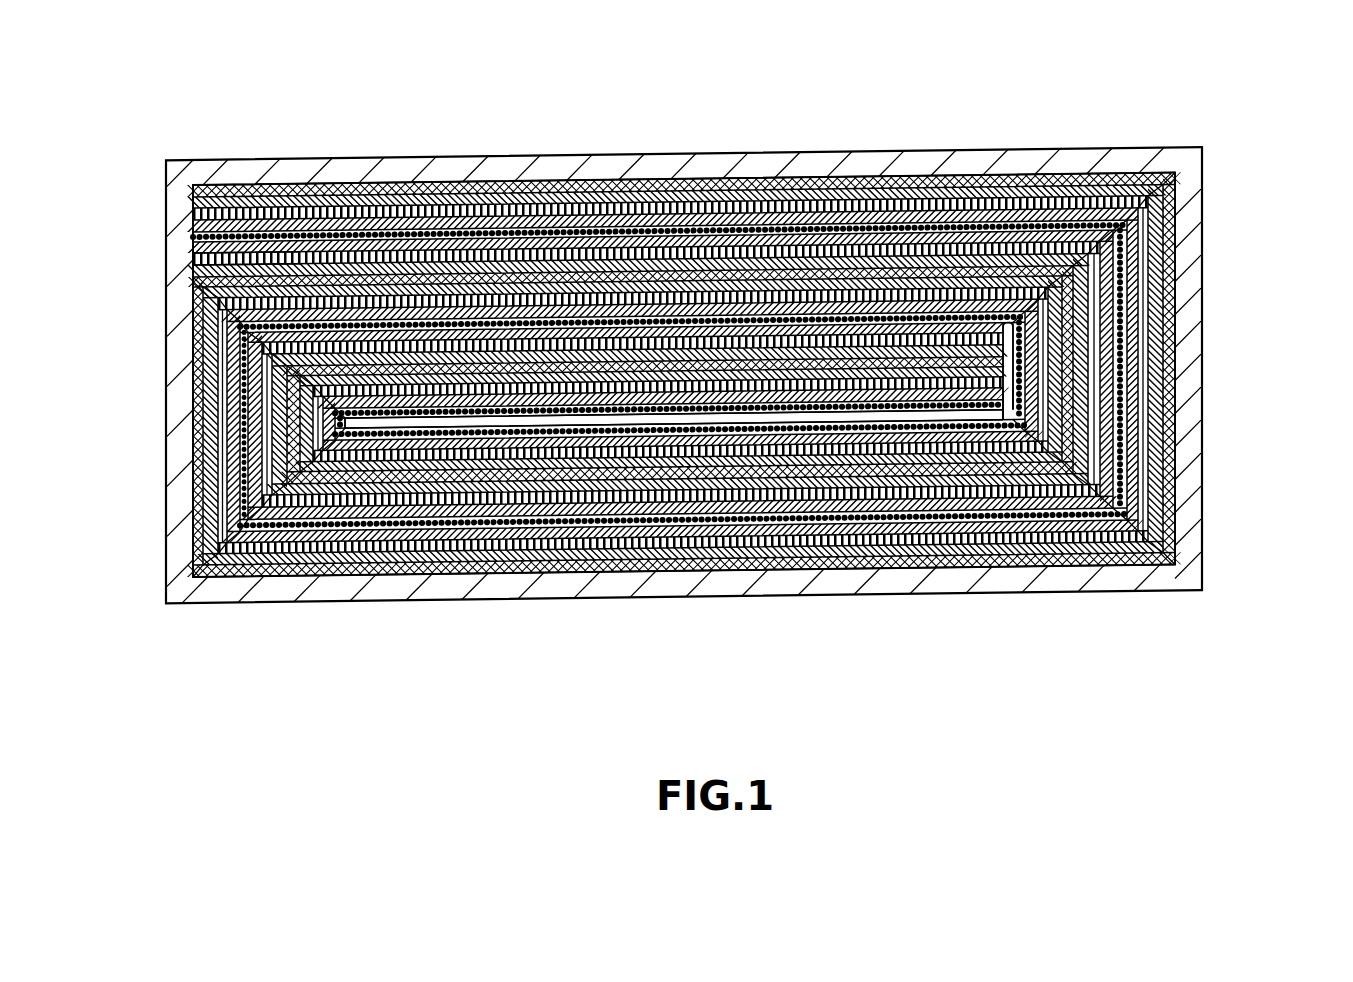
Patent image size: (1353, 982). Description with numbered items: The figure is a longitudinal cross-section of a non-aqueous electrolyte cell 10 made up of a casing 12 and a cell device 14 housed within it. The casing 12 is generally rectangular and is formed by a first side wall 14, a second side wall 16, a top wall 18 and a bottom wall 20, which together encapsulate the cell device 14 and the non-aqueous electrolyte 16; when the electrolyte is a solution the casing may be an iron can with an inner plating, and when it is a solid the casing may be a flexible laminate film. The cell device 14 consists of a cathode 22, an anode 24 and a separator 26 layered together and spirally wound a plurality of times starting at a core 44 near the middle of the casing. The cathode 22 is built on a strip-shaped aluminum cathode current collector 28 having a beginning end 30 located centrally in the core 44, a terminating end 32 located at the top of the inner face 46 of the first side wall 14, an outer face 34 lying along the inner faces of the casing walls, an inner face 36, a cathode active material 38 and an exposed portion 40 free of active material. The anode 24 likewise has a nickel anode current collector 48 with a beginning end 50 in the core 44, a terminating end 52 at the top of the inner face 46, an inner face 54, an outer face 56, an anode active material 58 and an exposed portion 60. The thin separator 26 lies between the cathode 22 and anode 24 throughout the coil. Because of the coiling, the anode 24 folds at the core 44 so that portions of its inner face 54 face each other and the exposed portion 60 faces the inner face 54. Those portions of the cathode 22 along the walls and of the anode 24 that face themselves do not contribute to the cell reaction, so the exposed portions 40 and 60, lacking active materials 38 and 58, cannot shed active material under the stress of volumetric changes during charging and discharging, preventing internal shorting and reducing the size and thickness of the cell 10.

The non-aqueous electrolyte cell 10 is at (631, 660).
The casing 12 is at (1185, 545).
The cell device 14 is at (1178, 362).
The second side wall 16 is at (1178, 397).
The top wall 18 is at (383, 165).
The bottom wall 20 is at (335, 596).
The cathode 22 is at (1272, 237).
The anode 24 is at (1262, 425).
The separator 26 is at (1232, 318).
The cathode current collector 28 is at (1240, 228).
The beginning end of cathode current collector 30 is at (1007, 330).
The terminating end of cathode current collector 32 is at (193, 186).
The outer face of cathode current collector 34 is at (1175, 256).
The inner face of cathode current collector 36 is at (1175, 280).
The cathode active material 38 is at (1230, 203).
The exposed portion of cathode current collector 40 is at (599, 184).
The core 44 is at (620, 420).
The inner face of first side wall 46 is at (192, 343).
The anode current collector 48 is at (1175, 448).
The beginning end of anode current collector 50 is at (1004, 400).
The terminating end of anode current collector 52 is at (195, 254).
The inner face of anode current collector 54 is at (1175, 473).
The outer face of anode current collector 56 is at (1175, 462).
The anode active material 58 is at (1175, 500).
The exposed portion of anode current collector 60 is at (760, 415).